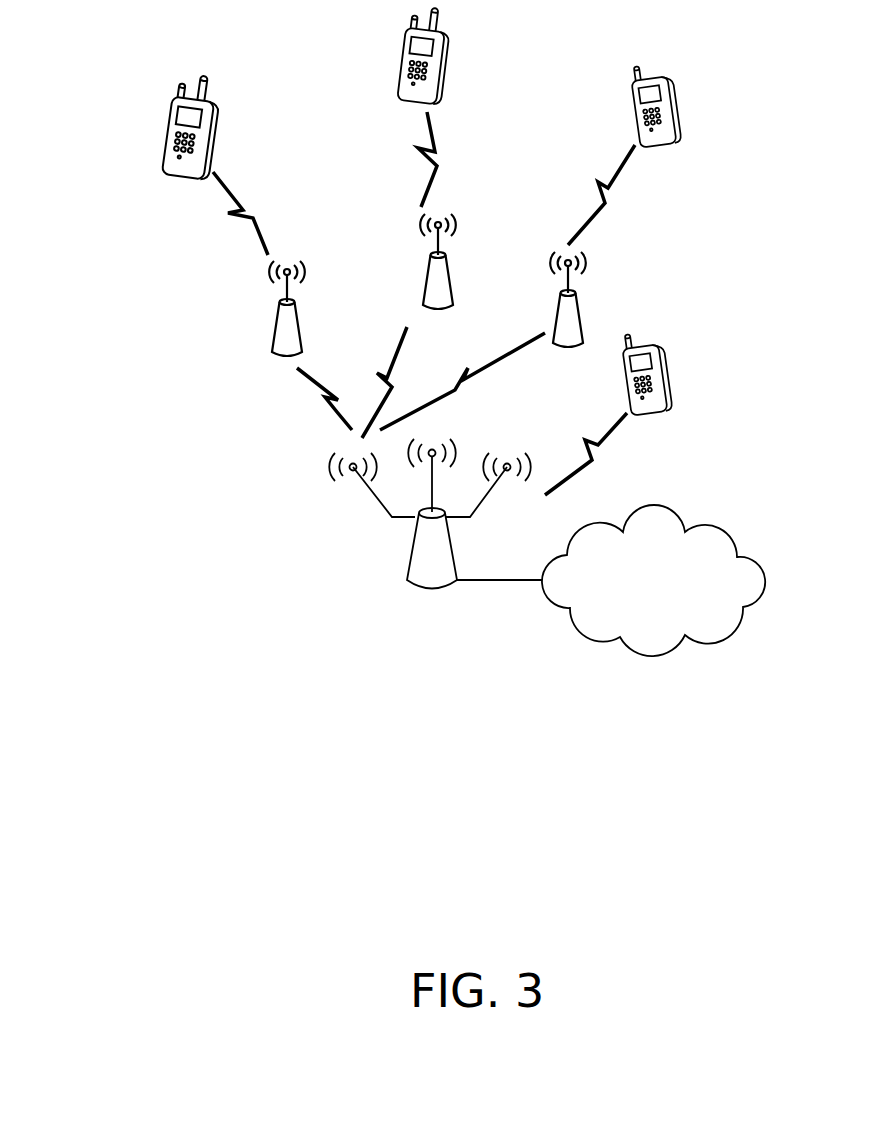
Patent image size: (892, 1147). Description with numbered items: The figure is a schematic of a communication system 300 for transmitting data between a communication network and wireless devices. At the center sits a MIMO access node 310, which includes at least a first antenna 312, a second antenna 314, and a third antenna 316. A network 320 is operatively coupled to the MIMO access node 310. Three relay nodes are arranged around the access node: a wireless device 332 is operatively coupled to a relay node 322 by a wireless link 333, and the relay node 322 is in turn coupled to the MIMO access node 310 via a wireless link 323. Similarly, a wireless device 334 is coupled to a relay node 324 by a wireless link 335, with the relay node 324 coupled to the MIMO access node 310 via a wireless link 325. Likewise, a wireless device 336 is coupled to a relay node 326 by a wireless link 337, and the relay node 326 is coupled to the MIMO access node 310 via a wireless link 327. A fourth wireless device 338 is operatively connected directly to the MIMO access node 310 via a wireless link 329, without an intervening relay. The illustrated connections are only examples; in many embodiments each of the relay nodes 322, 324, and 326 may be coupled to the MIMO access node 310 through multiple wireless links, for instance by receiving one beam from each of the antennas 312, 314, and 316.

The communication system 300 is at (320, 722).
The MIMO access node 310 is at (423, 592).
The first antenna 312 is at (352, 486).
The second antenna 314 is at (445, 425).
The third antenna 316 is at (515, 483).
The network 320 is at (653, 580).
The relay node 322 is at (275, 352).
The wireless link 323 is at (315, 398).
The relay node 324 is at (422, 303).
The wireless link 325 is at (397, 372).
The relay node 326 is at (584, 322).
The wireless link 327 is at (525, 343).
The wireless link 329 is at (603, 443).
The wireless device 332 is at (167, 138).
The wireless link 333 is at (228, 212).
The wireless device 334 is at (400, 62).
The wireless link 335 is at (417, 167).
The wireless device 336 is at (668, 143).
The wireless link 337 is at (608, 207).
The wireless device 338 is at (658, 413).